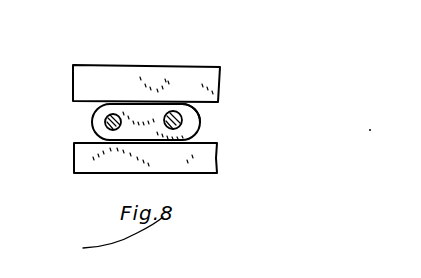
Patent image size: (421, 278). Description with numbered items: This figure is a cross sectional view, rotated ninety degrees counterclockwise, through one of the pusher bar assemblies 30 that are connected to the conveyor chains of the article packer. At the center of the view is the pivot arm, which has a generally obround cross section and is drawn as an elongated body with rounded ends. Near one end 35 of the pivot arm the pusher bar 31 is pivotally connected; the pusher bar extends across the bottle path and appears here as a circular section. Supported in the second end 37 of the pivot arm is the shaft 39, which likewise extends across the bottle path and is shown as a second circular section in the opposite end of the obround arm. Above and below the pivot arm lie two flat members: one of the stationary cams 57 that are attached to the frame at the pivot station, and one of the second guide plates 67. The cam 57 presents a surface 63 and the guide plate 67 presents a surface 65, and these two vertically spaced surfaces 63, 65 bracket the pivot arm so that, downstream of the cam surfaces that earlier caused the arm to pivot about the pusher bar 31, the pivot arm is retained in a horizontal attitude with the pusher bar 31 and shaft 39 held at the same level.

The pusher bar assembly 30 is at (207, 127).
The pusher bar 31 is at (172, 112).
The one end of pivot arm 35 is at (212, 108).
The second end of pivot arm 37 is at (92, 118).
The shaft 39 is at (112, 114).
The stationary cam 57 is at (203, 70).
The surface 63 is at (240, 99).
The surface 65 is at (212, 148).
The second guide plate 67 is at (115, 155).